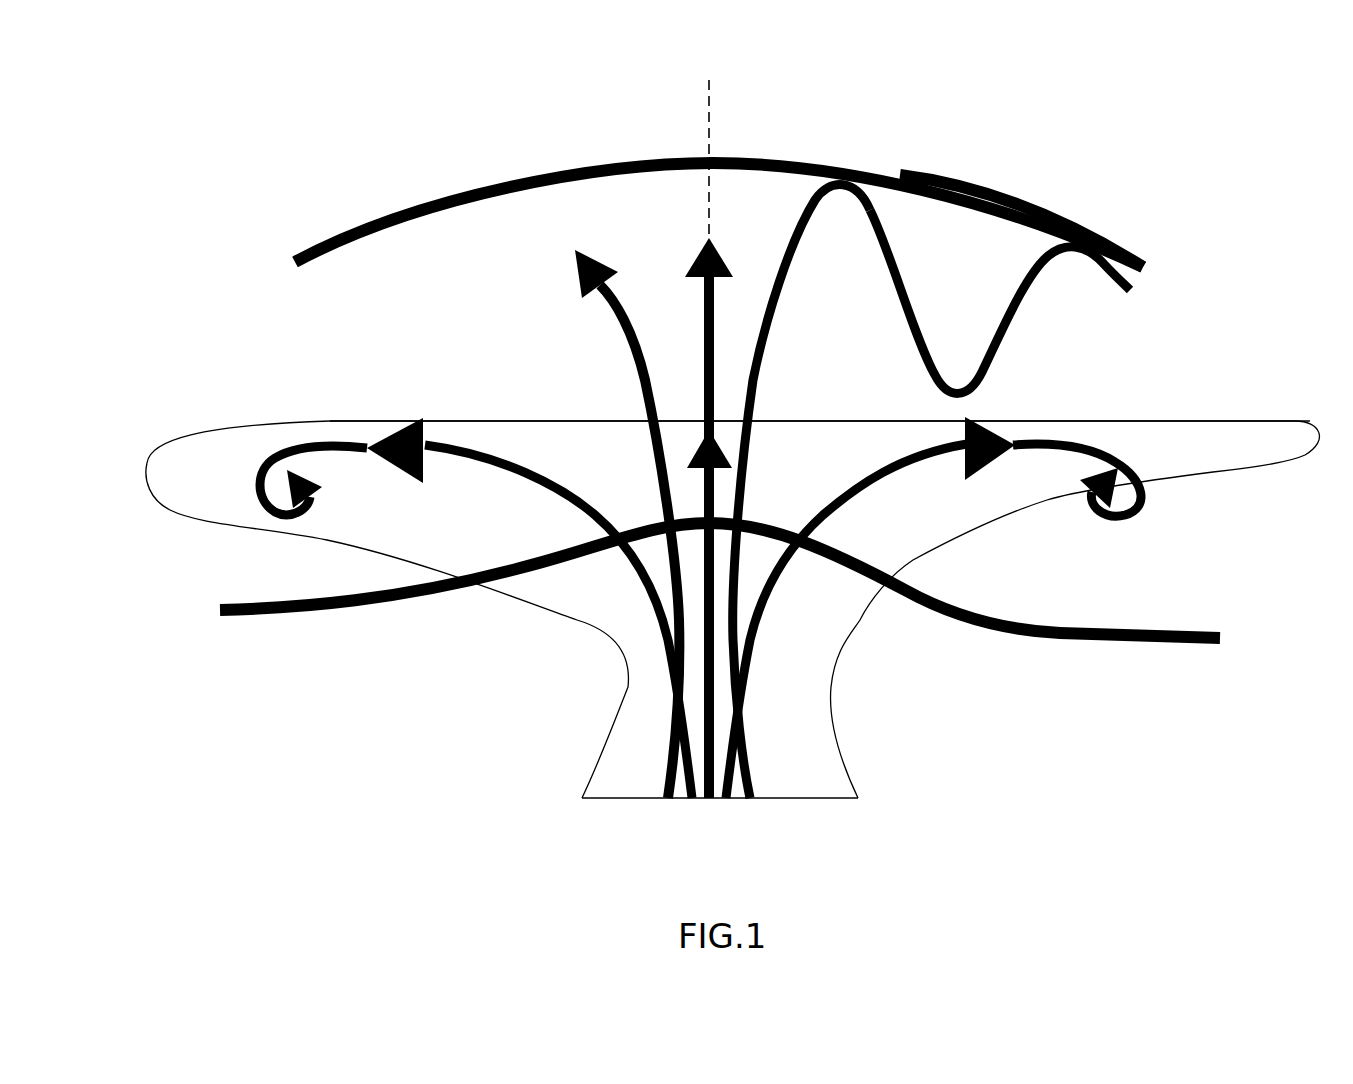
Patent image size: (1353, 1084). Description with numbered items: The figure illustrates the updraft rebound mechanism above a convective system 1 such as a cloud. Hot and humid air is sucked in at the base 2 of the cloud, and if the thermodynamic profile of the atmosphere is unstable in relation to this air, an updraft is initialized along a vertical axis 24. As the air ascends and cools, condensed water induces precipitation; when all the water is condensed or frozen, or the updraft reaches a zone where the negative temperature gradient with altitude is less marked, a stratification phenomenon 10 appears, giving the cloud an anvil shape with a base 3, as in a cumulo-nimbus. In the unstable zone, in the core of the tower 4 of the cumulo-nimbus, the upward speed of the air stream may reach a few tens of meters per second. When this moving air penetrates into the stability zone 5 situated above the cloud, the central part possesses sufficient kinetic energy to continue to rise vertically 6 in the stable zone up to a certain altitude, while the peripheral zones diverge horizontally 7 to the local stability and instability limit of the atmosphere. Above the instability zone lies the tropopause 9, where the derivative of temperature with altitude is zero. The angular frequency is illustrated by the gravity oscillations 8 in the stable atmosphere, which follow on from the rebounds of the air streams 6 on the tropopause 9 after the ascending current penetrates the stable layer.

The convective system 1 is at (1293, 460).
The base 2 is at (807, 800).
The base of the anvil 3 is at (1150, 645).
The tower 4 is at (817, 655).
The stability zone 5 is at (386, 283).
The vertical rise of air streams 6 is at (613, 323).
The horizontal divergence 7 is at (263, 470).
The gravity oscillations 8 is at (907, 260).
The tropopause 9 is at (1033, 203).
The stratification phenomenon 10 is at (843, 442).
The vertical axis 24 is at (712, 108).